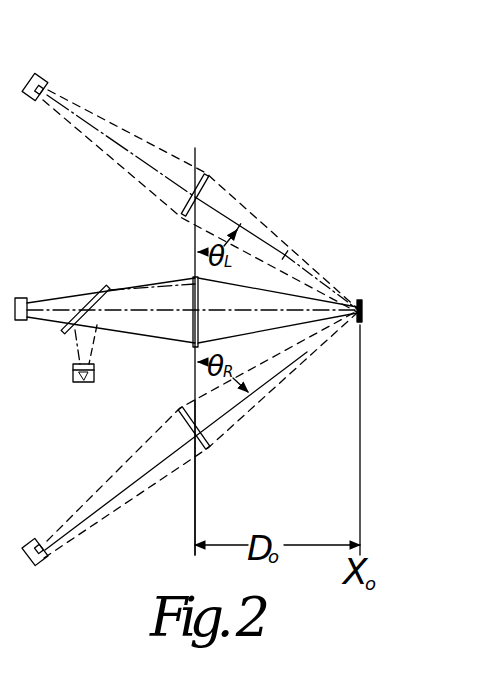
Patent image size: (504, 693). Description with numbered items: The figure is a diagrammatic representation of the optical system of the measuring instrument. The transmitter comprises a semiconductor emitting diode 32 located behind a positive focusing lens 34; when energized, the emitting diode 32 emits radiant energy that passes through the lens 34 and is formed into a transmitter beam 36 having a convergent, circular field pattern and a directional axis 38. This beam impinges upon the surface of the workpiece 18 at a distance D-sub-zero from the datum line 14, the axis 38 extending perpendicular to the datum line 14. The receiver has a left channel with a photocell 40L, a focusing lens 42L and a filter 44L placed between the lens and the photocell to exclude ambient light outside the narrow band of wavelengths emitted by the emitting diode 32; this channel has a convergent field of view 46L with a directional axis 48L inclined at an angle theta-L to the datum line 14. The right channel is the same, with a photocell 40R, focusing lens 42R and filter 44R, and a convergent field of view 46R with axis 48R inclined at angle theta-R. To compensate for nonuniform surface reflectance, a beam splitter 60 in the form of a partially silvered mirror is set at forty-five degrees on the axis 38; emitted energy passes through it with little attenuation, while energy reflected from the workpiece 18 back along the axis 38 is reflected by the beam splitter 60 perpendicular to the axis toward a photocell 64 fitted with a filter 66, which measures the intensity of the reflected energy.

The datum line 14 is at (196, 507).
The workpiece 18 is at (361, 300).
The semiconductor emitting diode 32 is at (22, 298).
The positive focusing lens 34 is at (193, 298).
The transmitter beam 36 is at (233, 336).
The directional axis 38 is at (248, 289).
The photocell 40L is at (66, 101).
The photocell 40R is at (77, 538).
The focusing lens 42L is at (209, 177).
The focusing lens 42R is at (209, 447).
The filter 44L is at (36, 102).
The filter 44R is at (39, 538).
The field of view 46L is at (268, 224).
The field of view 46R is at (307, 363).
The directional axis 48L is at (287, 254).
The axis 48R is at (227, 412).
The beam splitter 60 is at (107, 286).
The photocell 64 is at (59, 380).
The filter 66 is at (73, 368).